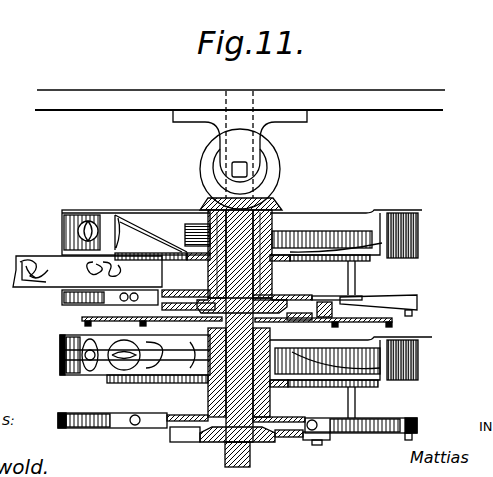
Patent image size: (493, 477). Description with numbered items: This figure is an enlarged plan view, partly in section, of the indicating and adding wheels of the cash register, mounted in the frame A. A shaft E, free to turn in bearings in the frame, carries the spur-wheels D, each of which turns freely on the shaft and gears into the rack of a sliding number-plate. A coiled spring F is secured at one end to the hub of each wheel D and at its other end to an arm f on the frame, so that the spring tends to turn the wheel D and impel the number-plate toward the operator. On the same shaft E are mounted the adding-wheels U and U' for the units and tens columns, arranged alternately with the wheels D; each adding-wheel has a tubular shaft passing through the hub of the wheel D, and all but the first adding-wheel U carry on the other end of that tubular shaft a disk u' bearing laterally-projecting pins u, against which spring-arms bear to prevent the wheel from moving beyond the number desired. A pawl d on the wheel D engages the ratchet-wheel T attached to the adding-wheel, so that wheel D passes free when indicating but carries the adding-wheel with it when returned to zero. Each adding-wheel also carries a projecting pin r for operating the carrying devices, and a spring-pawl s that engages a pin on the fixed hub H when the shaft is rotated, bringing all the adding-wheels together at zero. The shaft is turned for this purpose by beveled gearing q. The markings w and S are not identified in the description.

The frame A is at (240, 94).
The beveled gearing q is at (243, 169).
The shaft E is at (254, 338).
The coiled spring F is at (344, 235).
The arm f is at (406, 265).
The spur-wheel D is at (365, 339).
The ratchet-wheel T is at (239, 350).
The pawl d is at (337, 290).
The adding-wheel U is at (386, 302).
The projecting pin r is at (414, 382).
The spring-pawl s is at (331, 310).
The laterally-projecting pins u is at (232, 326).
The thin bar foot w is at (151, 325).
The disk u' is at (396, 323).
The fixed hub H is at (186, 379).
The adding-wheel U' is at (246, 415).
The lower slab S is at (302, 444).